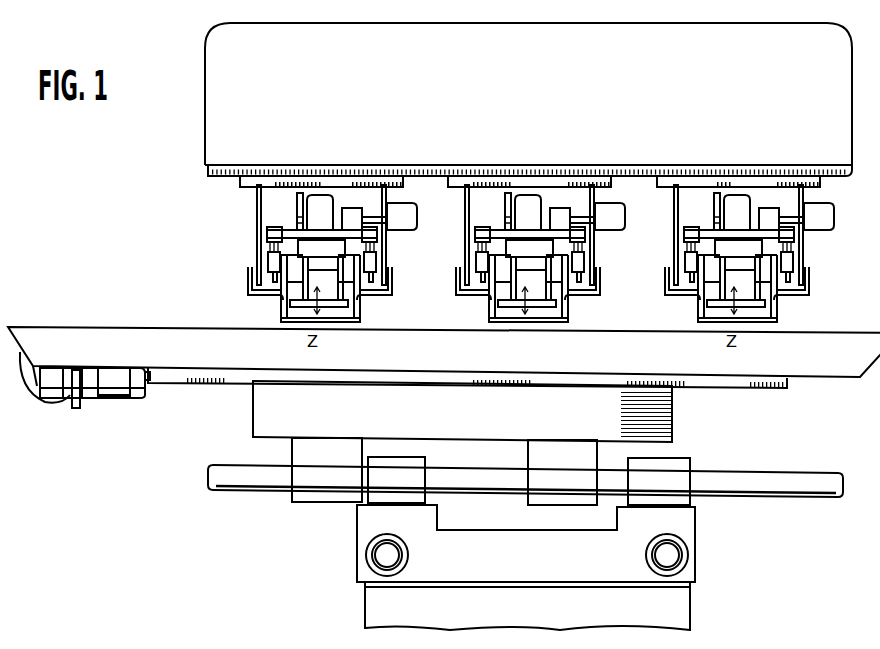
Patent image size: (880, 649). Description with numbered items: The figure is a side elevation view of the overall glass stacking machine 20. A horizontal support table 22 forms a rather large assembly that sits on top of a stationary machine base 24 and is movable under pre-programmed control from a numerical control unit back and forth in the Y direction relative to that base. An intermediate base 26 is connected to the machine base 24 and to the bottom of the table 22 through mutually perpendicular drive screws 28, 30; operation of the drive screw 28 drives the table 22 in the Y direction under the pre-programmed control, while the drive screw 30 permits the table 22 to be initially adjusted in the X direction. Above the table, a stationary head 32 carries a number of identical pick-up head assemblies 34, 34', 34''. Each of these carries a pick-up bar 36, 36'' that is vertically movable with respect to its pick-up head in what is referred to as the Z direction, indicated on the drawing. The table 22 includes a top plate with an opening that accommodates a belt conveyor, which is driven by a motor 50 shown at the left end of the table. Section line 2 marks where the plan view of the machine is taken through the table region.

The glass stacking machine 20 is at (155, 240).
The horizontal support table 22 is at (72, 340).
The machine base 24 is at (686, 617).
The intermediate base 26 is at (698, 536).
The drive screw 28 is at (673, 560).
The drive screw 30 is at (732, 475).
The stationary head 32 is at (226, 88).
The pick-up head assembly 34 is at (328, 229).
The pick-up head assembly 34' is at (536, 229).
The pick-up head assembly 34'' is at (745, 229).
The pick-up bar 36 is at (342, 312).
The pick-up bar 36'' is at (770, 314).
The motor 50 is at (117, 400).
The section line 2— 2 is at (440, 322).